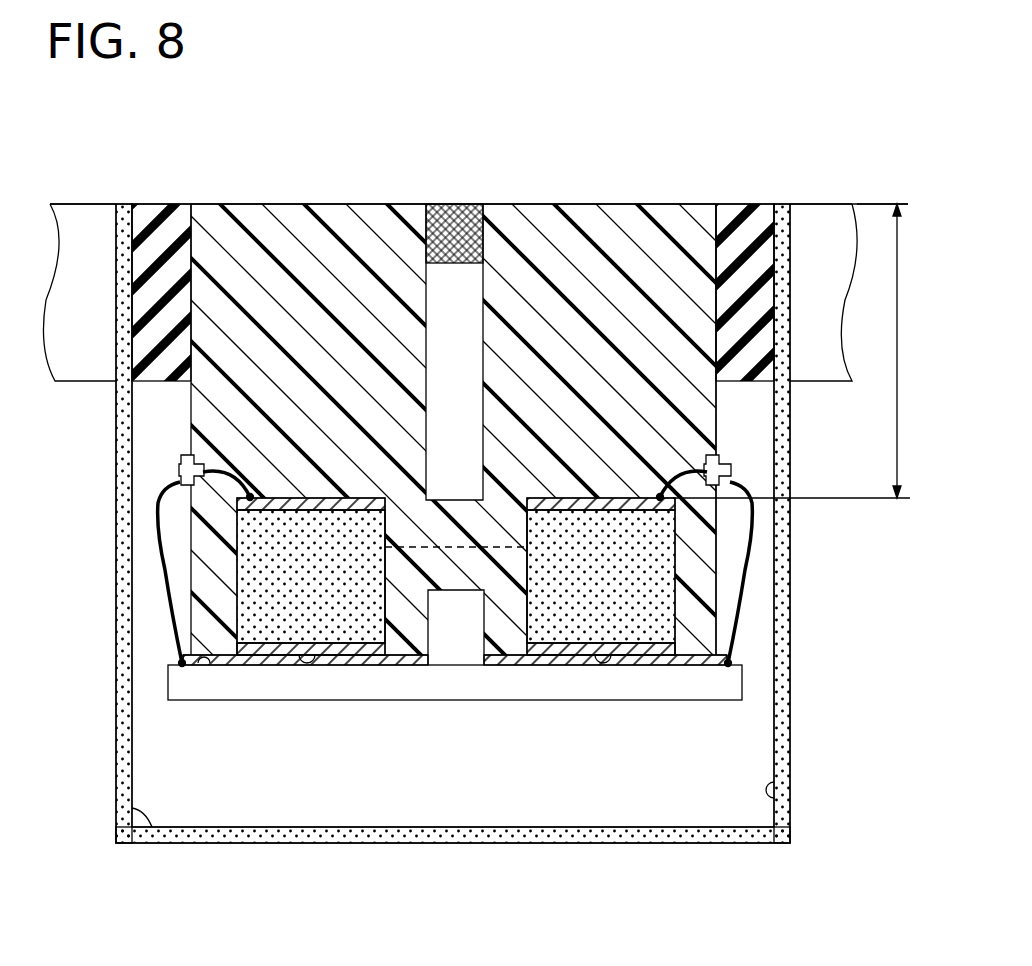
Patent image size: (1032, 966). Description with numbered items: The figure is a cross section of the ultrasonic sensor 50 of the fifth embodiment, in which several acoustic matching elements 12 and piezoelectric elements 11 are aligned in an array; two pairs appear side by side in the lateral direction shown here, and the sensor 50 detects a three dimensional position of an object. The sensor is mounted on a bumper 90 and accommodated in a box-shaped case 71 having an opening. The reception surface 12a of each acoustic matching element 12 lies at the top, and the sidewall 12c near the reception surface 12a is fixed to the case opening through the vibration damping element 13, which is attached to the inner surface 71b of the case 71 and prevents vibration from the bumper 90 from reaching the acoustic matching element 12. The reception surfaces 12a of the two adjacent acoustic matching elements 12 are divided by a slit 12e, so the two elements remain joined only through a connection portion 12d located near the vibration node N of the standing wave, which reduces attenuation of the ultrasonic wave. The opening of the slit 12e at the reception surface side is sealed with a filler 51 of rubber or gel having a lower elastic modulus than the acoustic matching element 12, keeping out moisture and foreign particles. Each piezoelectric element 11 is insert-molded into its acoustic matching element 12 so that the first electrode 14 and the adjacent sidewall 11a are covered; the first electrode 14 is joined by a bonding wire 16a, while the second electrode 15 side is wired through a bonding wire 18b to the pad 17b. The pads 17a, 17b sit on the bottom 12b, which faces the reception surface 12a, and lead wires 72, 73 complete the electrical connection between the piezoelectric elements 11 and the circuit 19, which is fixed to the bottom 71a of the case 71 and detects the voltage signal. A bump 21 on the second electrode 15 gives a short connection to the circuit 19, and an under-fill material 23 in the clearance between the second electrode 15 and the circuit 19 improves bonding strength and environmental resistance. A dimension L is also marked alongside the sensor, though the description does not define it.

The piezoelectric element 11 is at (237, 582).
The sidewall of the piezoelectric element 11a is at (385, 570).
The acoustic matching element 12 is at (718, 400).
The reception surface 12a is at (338, 204).
The bottom 12b is at (183, 652).
The sidewall of the acoustic matching element 12c is at (715, 235).
The connection portion 12d is at (457, 570).
The slit 12e is at (428, 298).
The vibration damping element 13 is at (155, 213).
The first electrode 14 is at (237, 500).
The second electrode 15 is at (250, 645).
The bonding wire 16a is at (237, 490).
The pad 17a is at (175, 470).
The pad 17b is at (731, 467).
The bonding wire 18b is at (674, 490).
The circuit 19 is at (173, 673).
The bump 21 is at (313, 658).
The under-fill material 23 is at (240, 665).
The ultrasonic sensor 50 is at (825, 178).
The filler 51 is at (470, 227).
The case 71 is at (785, 738).
The bottom of the case 71a is at (132, 808).
The inner surface of the case 71b is at (778, 795).
The lead wire 72 is at (157, 552).
The lead wire 73 is at (743, 557).
The bumper 90 is at (83, 213).
The length L is at (796, 351).
The vibration node N is at (420, 547).